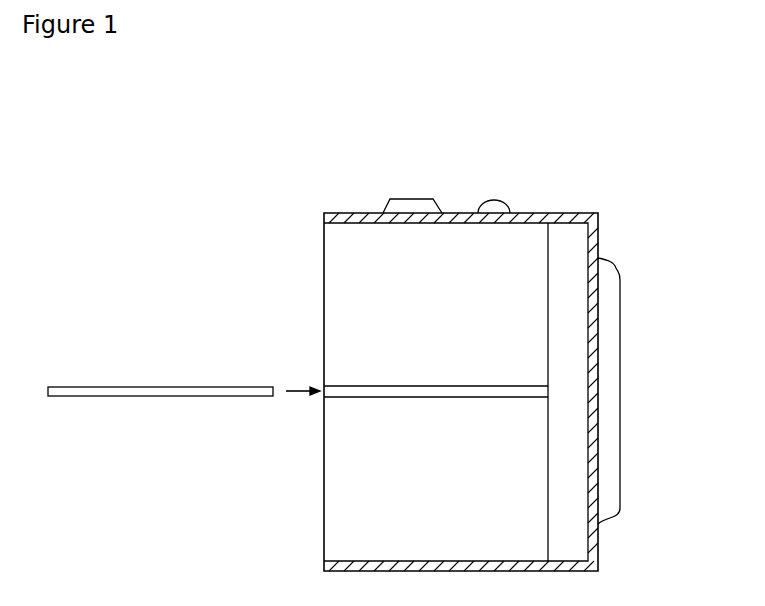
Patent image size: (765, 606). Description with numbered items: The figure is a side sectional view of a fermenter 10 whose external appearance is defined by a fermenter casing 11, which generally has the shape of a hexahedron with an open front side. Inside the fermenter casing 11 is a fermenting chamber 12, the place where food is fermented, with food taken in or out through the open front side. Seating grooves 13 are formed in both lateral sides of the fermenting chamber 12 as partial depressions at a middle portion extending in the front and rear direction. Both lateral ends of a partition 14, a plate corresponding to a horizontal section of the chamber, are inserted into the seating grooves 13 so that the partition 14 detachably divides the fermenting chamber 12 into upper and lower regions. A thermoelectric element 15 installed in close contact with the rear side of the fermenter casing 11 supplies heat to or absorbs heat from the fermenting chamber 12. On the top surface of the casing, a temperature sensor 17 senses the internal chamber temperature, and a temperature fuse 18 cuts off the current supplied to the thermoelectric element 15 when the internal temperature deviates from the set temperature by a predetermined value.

The fermenter 10 is at (280, 275).
The fermenter casing 11 is at (598, 546).
The fermenting chamber 12 is at (449, 321).
The seating grooves 13 is at (348, 394).
The partition 14 is at (136, 397).
The thermoelectric element 15 is at (620, 405).
The temperature sensor 17 is at (411, 198).
The temperature fuse 18 is at (495, 200).